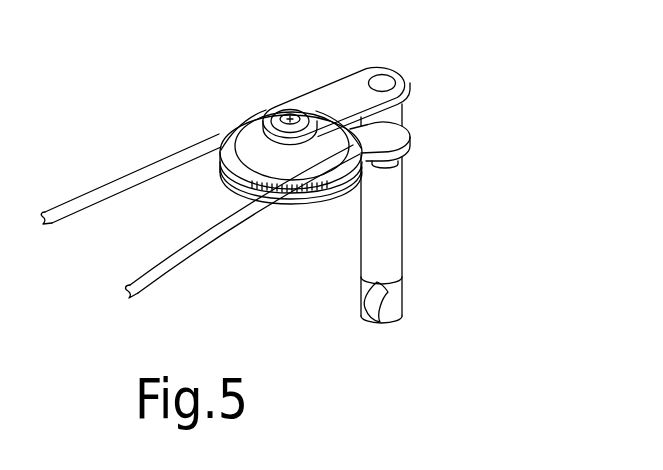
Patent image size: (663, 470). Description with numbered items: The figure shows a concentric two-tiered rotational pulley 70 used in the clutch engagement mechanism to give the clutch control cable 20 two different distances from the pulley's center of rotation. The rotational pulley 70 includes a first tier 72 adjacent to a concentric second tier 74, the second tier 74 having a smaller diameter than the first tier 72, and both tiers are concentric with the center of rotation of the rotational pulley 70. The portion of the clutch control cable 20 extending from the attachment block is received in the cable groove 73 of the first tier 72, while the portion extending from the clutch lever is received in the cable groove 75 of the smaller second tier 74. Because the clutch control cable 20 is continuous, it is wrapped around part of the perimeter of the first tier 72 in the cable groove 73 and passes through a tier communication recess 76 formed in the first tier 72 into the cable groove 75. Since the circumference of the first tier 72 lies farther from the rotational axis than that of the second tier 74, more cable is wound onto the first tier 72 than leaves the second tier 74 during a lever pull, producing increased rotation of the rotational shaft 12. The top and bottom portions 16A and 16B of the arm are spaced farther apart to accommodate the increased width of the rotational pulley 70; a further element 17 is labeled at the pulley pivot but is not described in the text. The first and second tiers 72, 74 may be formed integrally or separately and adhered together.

The rotational shaft 12 is at (402, 245).
The top portion of the arm 16A is at (411, 81).
The bottom portion of the arm 16B is at (408, 145).
The pivot pin 17 is at (291, 118).
The clutch control cable 20 is at (163, 280).
The rotational pulley 70 is at (222, 137).
The first tier 72 is at (278, 203).
The cable groove 73 is at (217, 138).
The second tier 74 is at (293, 116).
The cable groove 75 is at (285, 110).
The tier communication recess 76 is at (325, 180).